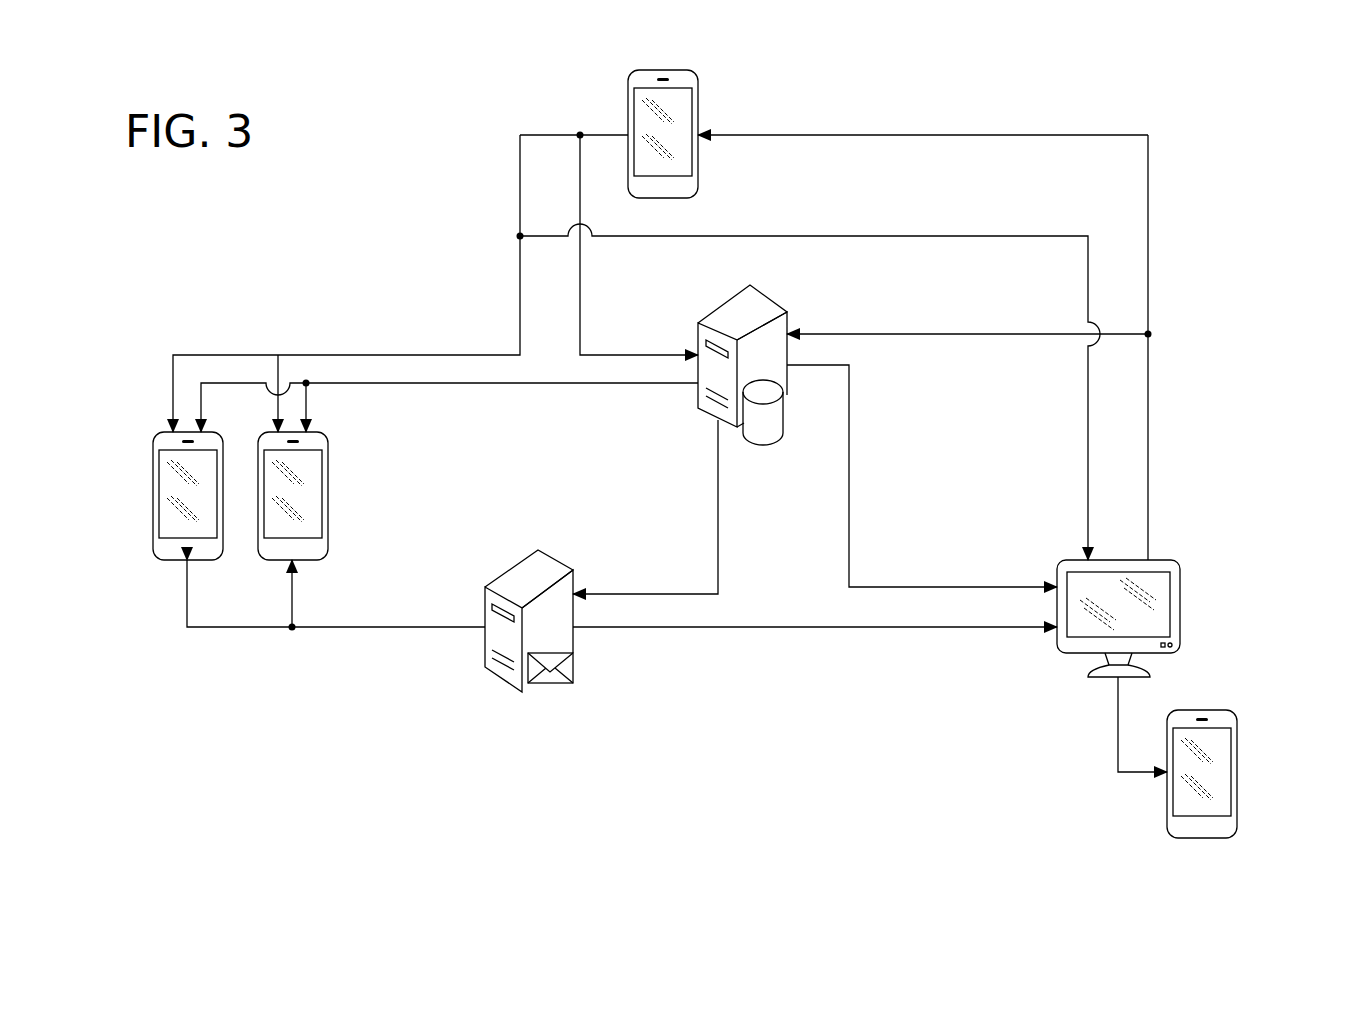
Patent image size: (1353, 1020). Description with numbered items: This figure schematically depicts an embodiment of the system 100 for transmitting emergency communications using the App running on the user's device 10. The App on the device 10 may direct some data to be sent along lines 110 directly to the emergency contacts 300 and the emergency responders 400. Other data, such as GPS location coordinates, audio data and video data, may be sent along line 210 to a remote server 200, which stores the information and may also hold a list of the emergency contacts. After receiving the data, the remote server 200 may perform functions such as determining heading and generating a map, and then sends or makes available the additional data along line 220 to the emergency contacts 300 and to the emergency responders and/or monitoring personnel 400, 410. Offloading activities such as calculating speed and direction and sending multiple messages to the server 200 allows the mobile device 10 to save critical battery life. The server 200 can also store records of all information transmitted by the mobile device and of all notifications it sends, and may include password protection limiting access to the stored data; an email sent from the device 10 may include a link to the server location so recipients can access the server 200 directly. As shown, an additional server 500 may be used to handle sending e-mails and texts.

The user's device 10 is at (698, 102).
The system 100 is at (343, 292).
The lines 110 is at (520, 283).
The remote server 200 is at (760, 300).
The line 210 is at (580, 290).
The line 220 is at (544, 385).
The emergency contacts 300 is at (153, 486).
The emergency responders 400 is at (1180, 597).
The monitoring personnel 410 is at (1235, 760).
The additional server 500 is at (555, 560).